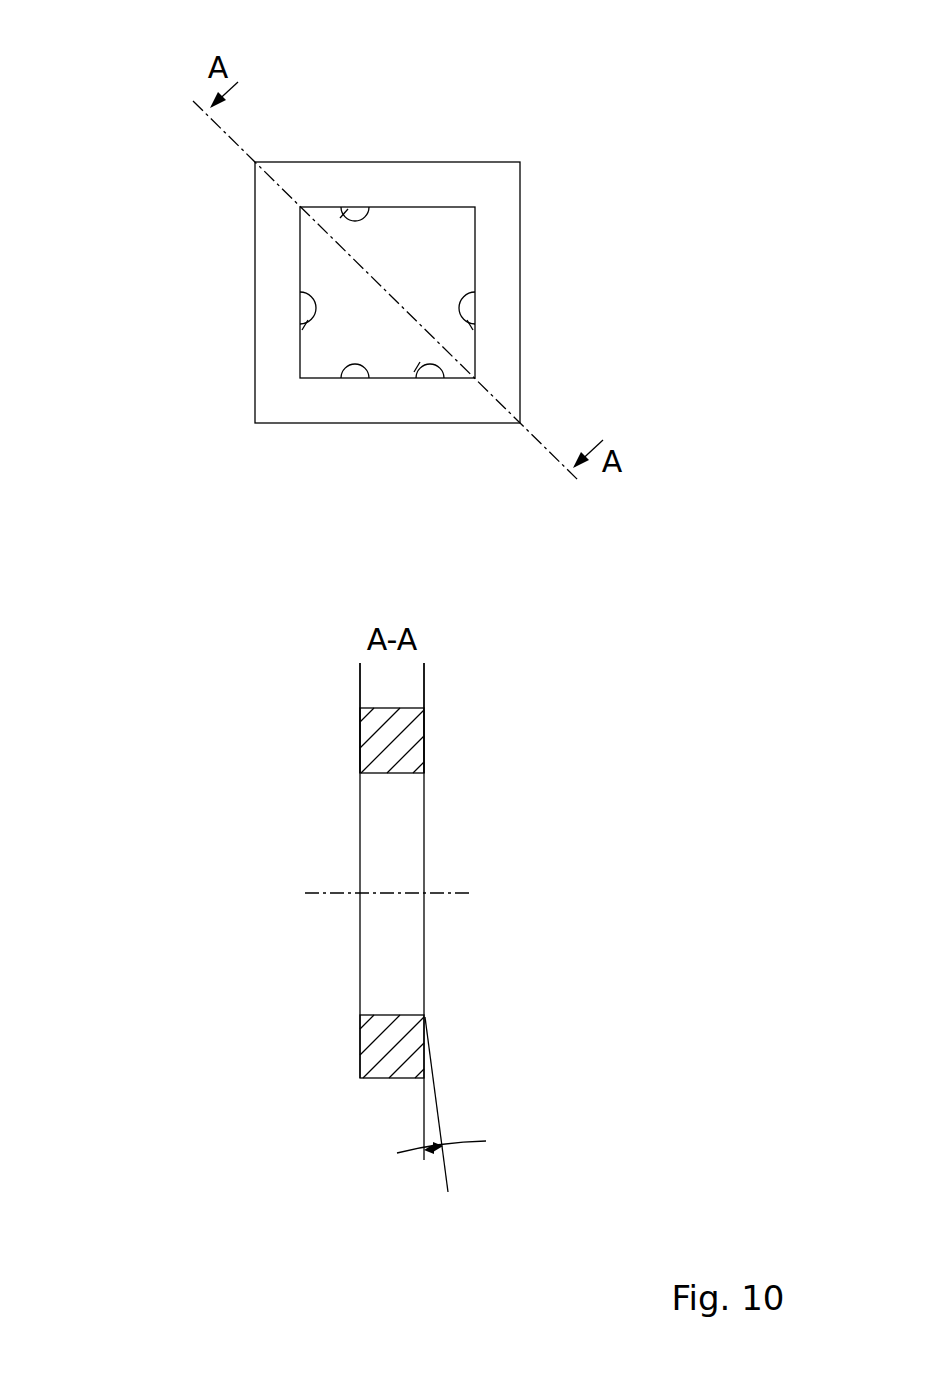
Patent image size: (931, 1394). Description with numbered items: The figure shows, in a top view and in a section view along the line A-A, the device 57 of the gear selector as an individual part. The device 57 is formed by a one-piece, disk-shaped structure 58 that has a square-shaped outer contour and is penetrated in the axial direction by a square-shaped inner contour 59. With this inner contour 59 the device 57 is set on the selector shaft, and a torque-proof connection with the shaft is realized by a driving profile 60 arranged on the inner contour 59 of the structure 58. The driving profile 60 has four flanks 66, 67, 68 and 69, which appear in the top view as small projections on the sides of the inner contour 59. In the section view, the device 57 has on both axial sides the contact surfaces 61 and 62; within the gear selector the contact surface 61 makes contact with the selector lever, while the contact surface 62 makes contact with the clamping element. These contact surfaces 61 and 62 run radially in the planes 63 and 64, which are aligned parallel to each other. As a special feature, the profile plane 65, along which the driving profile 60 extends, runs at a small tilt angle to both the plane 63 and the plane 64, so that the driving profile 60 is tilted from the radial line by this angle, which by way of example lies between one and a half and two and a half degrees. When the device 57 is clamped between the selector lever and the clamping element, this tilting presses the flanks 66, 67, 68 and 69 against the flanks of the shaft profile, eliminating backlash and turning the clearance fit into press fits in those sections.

The device 57 is at (506, 120).
The disk-shaped structure 58 is at (500, 240).
The inner contour 59 is at (323, 260).
The driving profile 60 is at (355, 367).
The contact surface 61 is at (362, 752).
The contact surface 62 is at (428, 742).
The plane 63 is at (360, 685).
The plane 64 is at (424, 685).
The profile plane 65 is at (446, 1188).
The flank 66 is at (370, 212).
The flank 67 is at (468, 300).
The flank 68 is at (433, 360).
The flank 69 is at (308, 300).